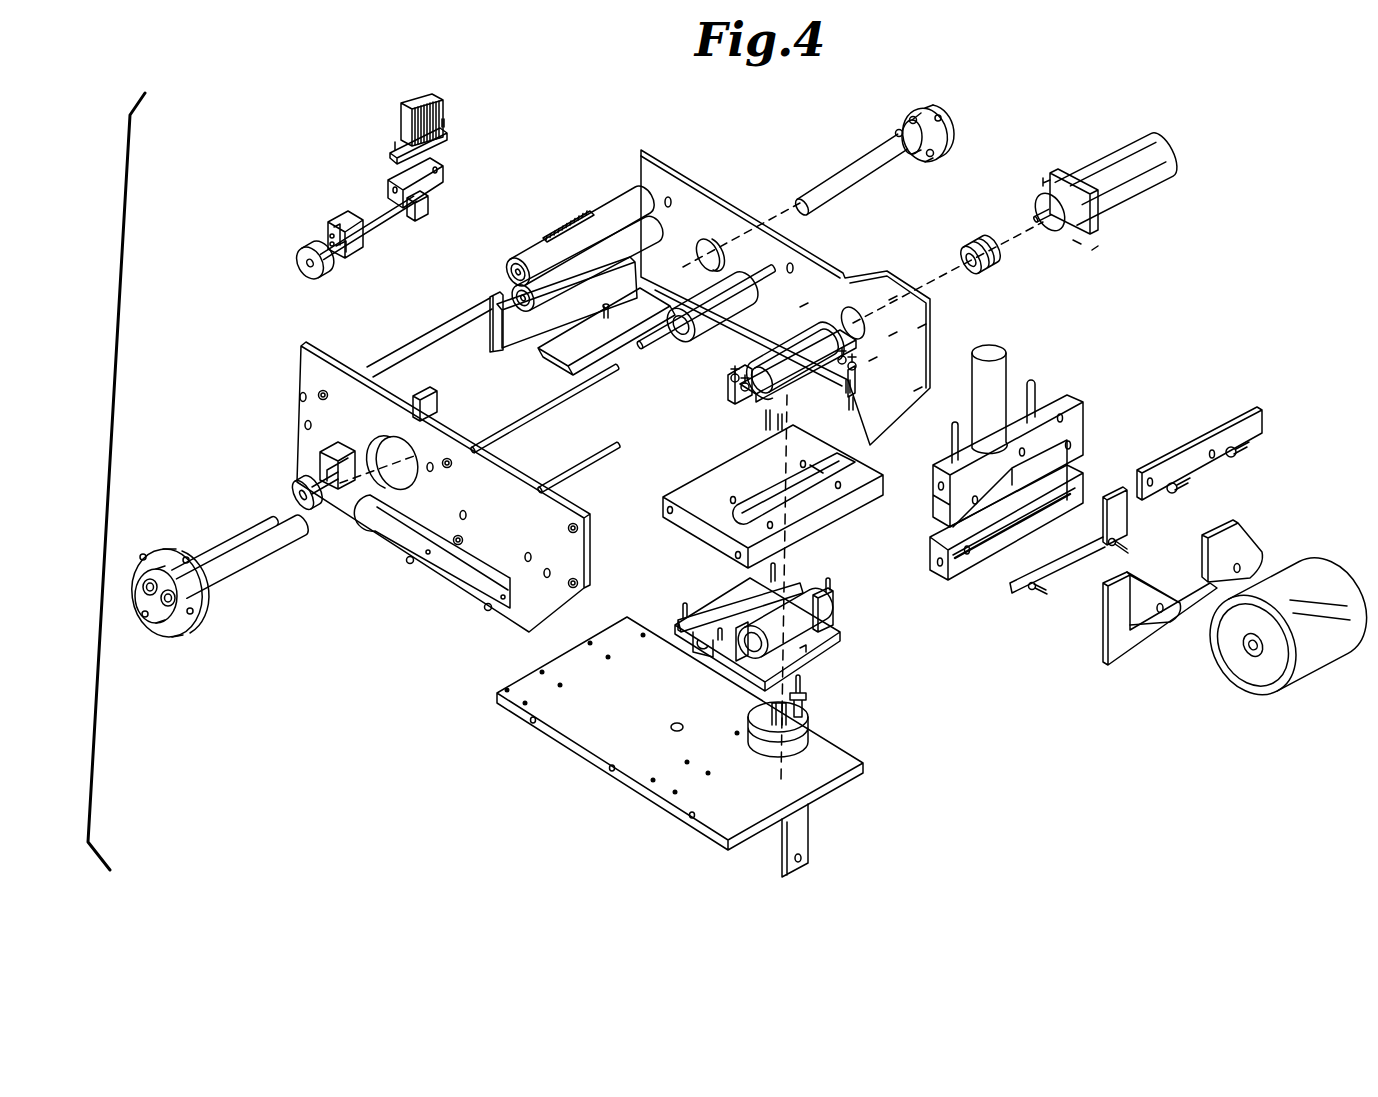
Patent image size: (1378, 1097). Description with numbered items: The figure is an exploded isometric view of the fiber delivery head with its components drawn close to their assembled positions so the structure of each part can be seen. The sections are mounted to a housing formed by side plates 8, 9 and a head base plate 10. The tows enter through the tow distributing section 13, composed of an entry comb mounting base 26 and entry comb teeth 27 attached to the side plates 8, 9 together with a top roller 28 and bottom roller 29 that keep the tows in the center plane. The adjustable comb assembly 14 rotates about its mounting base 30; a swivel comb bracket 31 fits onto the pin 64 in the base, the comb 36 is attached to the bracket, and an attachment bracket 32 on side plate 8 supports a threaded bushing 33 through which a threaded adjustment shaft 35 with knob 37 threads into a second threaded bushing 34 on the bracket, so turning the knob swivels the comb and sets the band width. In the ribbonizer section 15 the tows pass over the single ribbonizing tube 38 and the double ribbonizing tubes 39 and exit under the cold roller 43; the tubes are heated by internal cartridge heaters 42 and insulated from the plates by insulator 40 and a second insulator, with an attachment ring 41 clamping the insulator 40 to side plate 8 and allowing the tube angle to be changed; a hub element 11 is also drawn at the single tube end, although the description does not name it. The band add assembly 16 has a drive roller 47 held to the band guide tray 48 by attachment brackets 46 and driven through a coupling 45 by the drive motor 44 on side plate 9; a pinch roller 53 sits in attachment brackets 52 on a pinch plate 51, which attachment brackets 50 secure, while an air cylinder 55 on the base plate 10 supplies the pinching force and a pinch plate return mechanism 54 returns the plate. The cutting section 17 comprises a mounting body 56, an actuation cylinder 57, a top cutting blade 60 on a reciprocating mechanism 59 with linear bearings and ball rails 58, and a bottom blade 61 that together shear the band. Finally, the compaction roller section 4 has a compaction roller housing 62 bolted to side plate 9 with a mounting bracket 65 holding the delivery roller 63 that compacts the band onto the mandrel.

The compaction roller section 4 is at (1222, 596).
The side plate 8 is at (298, 372).
The side plate 9 is at (675, 170).
The head base plate 10 is at (797, 830).
The bearing hub 11 is at (947, 138).
The tow distributing section 13 is at (584, 201).
The adjustable comb assembly 14 is at (608, 199).
The ribbonizer section 15 is at (572, 324).
The band add assembly 16 is at (816, 679).
The cutting section 17 is at (1042, 447).
The entry comb mounting base 26 is at (522, 340).
The entry comb teeth 27 is at (582, 208).
The top roller 28 is at (547, 257).
The bottom roller 29 is at (553, 342).
The mounting base 30 is at (617, 327).
The swivel comb bracket 31 is at (427, 170).
The attachment bracket 32 is at (330, 218).
The threaded bushing 33 is at (363, 237).
The threaded bushing 34 is at (420, 207).
The threaded adjustment shaft 35 is at (340, 253).
The comb 36 is at (410, 113).
The knob 37 is at (303, 253).
The single ribbonizing tube 38 is at (843, 180).
The double ribbonizing tubes 39 is at (255, 538).
The insulator 40 is at (169, 594).
The attachment ring 41 is at (749, 496).
The cartridge heaters 42 is at (141, 603).
The cold roller 43 is at (713, 317).
The drive motor 44 is at (1158, 178).
The coupling 45 is at (1000, 260).
The attachment brackets 46 is at (804, 345).
The drive roller 47 is at (804, 334).
The band guide tray 48 is at (765, 418).
The attachment brackets 50 is at (707, 633).
The pinch plate 51 is at (842, 637).
The attachment brackets 52 is at (840, 628).
The pinch roller 53 is at (797, 613).
The pinch plate return mechanism 54 is at (810, 707).
The air cylinder 55 is at (800, 750).
The mounting body 56 is at (1065, 422).
The actuation cylinder 57 is at (1017, 367).
The linear bearings and ball rails 58 is at (1035, 387).
The reciprocating mechanism 59 is at (1053, 462).
The top cutting blade 60 is at (1247, 428).
The bottom blade 61 is at (1076, 570).
The compaction roller housing 62 is at (1117, 630).
The delivery roller 63 is at (1317, 583).
The pin 64 is at (606, 320).
The mounting bracket 65 is at (1240, 535).